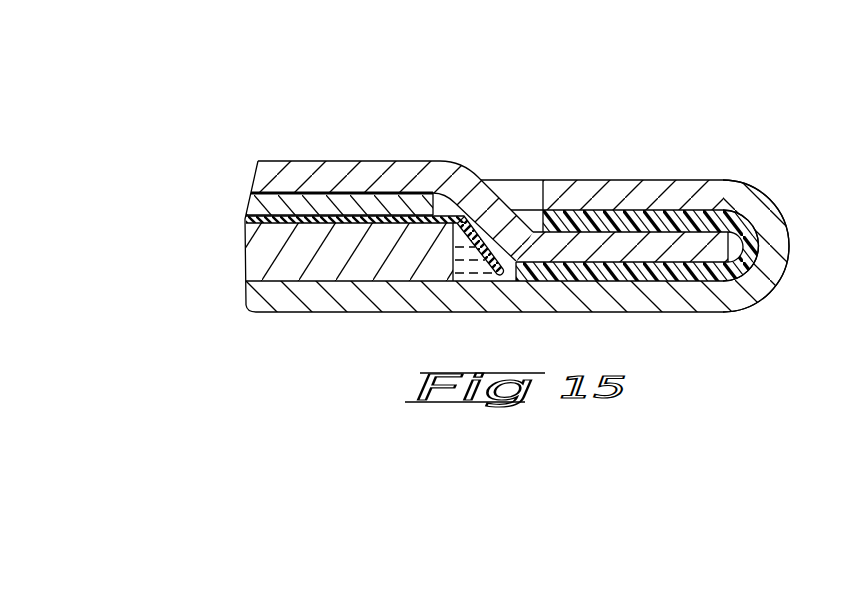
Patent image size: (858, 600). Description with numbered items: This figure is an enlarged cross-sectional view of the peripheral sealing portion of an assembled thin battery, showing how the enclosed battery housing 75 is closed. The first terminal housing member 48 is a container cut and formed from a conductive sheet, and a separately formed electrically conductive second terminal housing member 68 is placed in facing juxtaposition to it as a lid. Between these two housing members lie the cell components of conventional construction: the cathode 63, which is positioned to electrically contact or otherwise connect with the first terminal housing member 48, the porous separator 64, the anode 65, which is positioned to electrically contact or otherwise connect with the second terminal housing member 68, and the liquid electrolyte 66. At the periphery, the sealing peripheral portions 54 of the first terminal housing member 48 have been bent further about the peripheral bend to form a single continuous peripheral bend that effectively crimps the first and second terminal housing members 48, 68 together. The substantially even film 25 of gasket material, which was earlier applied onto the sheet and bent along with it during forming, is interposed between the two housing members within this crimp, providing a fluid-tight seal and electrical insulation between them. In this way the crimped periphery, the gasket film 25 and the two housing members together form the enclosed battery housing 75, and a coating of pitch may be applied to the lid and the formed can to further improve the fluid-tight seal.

The enclosed battery housing 75 is at (482, 129).
The second terminal housing member 68 is at (352, 162).
The liquid electrolyte 66 is at (502, 206).
The sealing peripheral portions 54 is at (600, 188).
The film of gasket material 25 is at (743, 230).
The anode 65 is at (270, 203).
The porous separator 64 is at (245, 219).
The cathode 63 is at (245, 253).
The first terminal housing member 48 is at (316, 293).